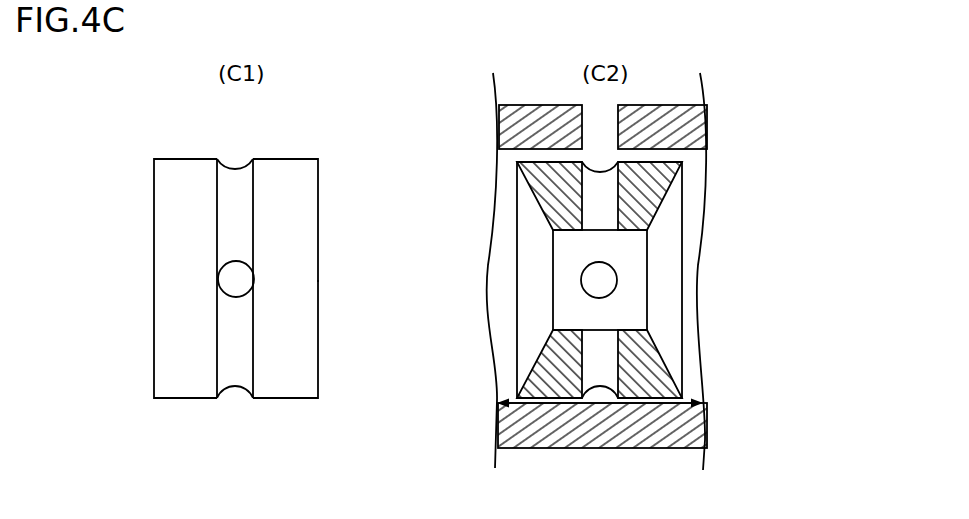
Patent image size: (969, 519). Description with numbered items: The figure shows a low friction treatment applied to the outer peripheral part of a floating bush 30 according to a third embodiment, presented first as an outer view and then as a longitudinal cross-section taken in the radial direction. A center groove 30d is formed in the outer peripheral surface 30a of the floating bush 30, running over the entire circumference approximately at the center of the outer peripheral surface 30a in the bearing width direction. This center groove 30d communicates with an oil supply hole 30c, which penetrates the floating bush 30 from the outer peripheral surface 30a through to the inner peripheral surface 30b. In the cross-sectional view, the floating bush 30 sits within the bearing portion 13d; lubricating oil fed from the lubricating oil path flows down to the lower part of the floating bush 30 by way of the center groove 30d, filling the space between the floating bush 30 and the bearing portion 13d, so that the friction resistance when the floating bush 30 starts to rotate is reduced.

The floating bush 30 is at (331, 193).
The outer peripheral surface 30a is at (293, 167).
The inner peripheral surface 30b is at (632, 309).
The oil supply hole 30c is at (229, 282).
The center groove 30d is at (234, 182).
The bearing portion 13d is at (693, 132).